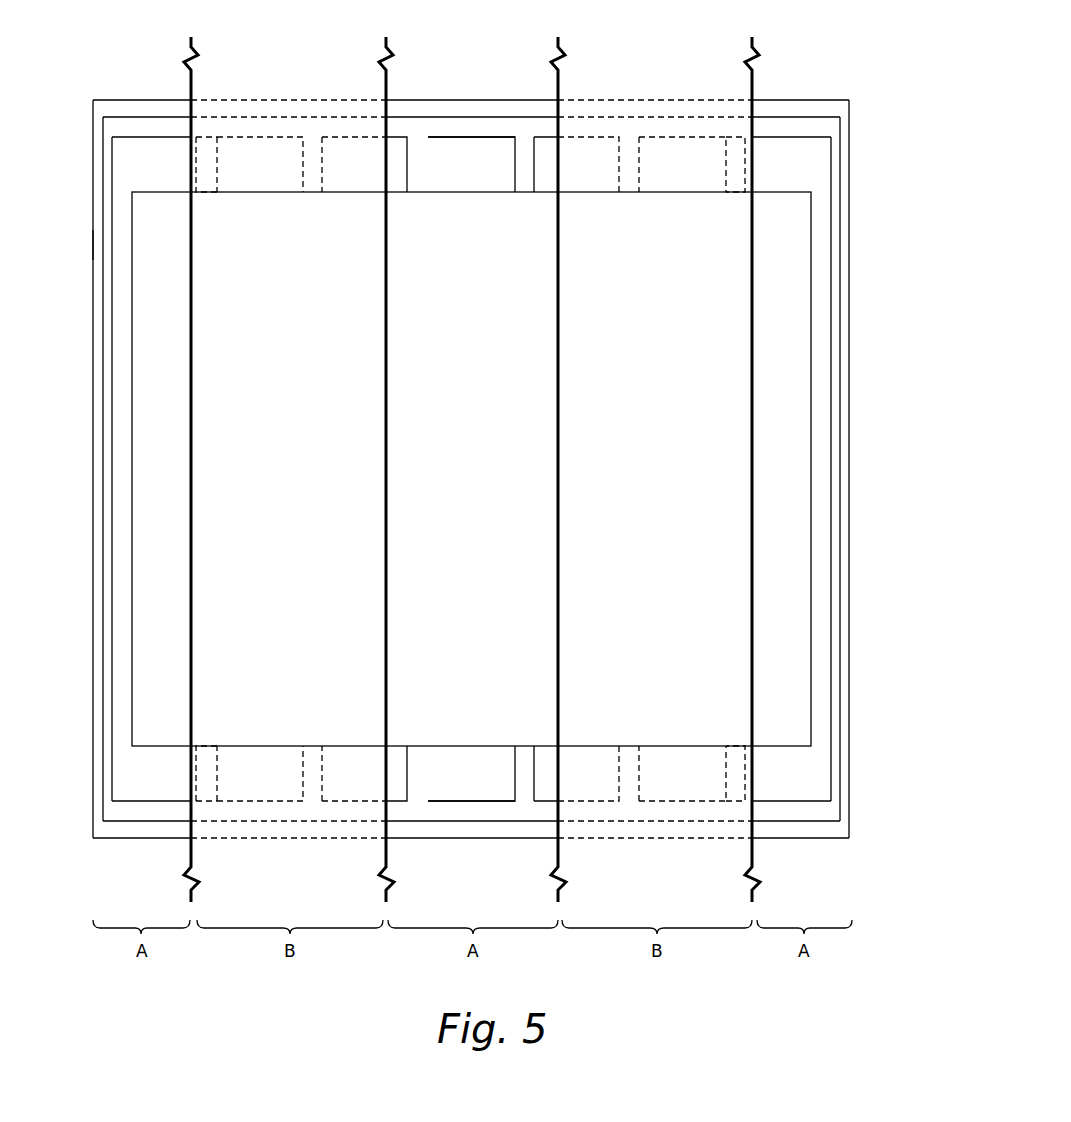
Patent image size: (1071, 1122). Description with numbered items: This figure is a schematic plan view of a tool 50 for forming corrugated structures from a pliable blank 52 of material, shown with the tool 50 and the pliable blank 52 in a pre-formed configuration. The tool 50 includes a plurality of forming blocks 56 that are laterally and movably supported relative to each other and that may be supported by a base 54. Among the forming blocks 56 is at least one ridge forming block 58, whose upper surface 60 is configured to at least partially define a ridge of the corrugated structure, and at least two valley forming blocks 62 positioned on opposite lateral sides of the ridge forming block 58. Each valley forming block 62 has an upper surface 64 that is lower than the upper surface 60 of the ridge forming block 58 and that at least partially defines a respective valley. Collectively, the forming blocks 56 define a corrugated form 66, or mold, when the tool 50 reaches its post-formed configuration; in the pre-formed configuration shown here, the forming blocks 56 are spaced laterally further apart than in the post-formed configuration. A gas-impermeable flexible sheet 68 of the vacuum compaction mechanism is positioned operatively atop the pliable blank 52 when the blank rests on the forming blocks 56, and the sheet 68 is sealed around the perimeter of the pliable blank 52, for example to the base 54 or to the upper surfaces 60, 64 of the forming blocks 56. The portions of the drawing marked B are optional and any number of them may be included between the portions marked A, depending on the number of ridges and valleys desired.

The tool 50 is at (832, 42).
The pliable blank 52 is at (812, 298).
The base 54 is at (851, 170).
The forming blocks 56 is at (162, 121).
The ridge forming block 58 is at (273, 133).
The upper surface 60 is at (268, 175).
The valley forming blocks 62 is at (118, 133).
The upper surface 64 is at (161, 175).
The corrugated form 66 is at (89, 242).
The gas-impermeable flexible sheet 68 is at (842, 593).